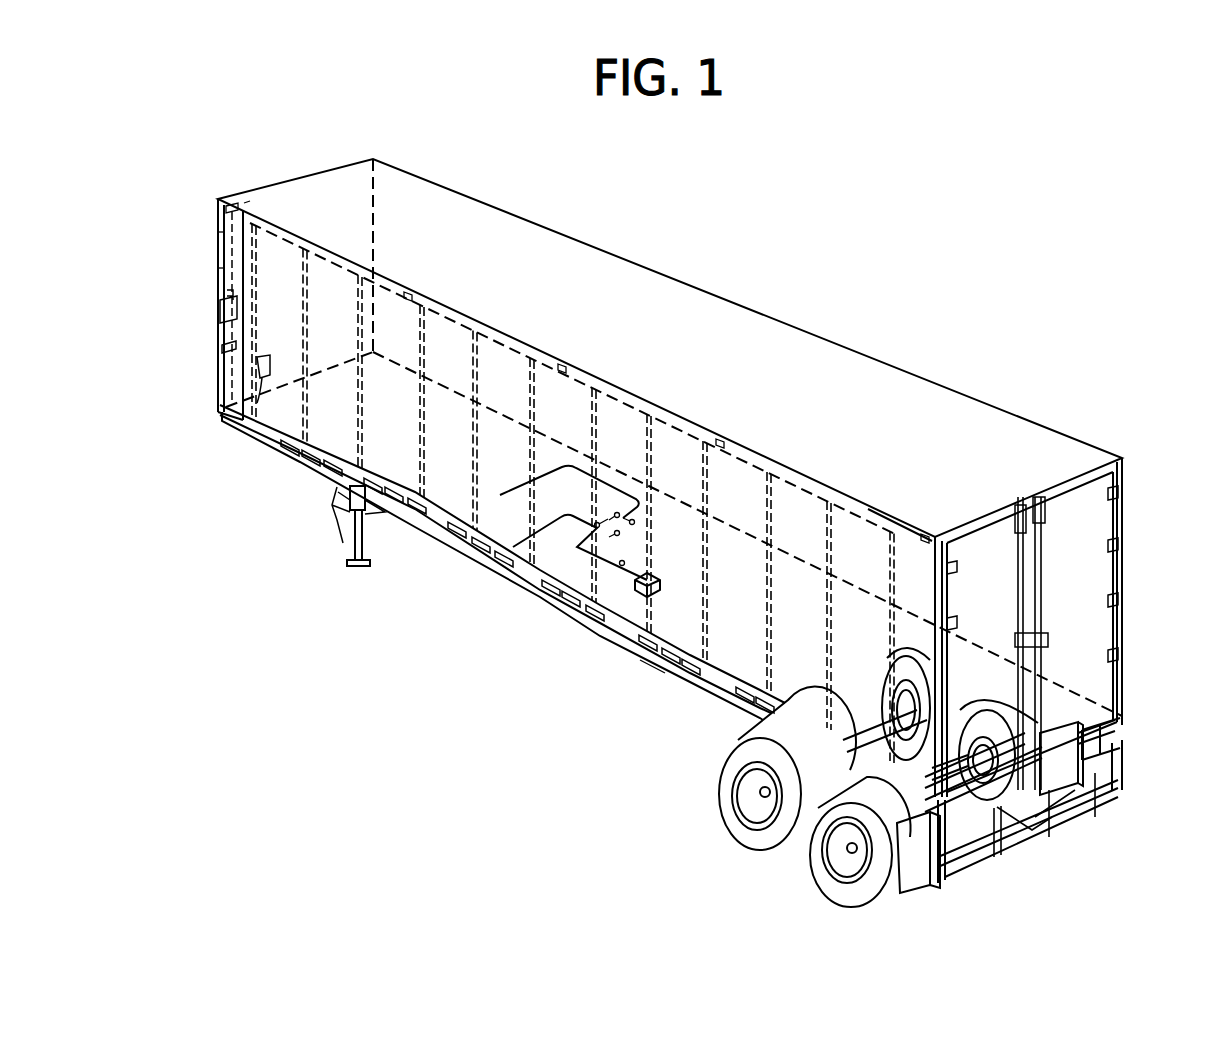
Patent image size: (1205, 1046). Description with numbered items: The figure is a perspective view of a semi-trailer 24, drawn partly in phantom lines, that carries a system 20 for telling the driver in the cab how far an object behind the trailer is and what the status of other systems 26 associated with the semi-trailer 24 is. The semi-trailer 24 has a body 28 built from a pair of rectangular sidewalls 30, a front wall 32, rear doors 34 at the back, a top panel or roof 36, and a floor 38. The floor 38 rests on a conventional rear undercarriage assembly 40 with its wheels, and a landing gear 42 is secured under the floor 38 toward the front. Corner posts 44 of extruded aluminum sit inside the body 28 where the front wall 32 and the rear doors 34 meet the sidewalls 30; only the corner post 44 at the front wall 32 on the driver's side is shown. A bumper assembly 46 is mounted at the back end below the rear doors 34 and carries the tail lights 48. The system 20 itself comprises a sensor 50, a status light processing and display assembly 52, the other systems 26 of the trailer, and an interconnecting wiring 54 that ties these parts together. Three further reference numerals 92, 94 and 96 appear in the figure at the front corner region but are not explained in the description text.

The system 20 is at (437, 530).
The semi-trailer 24 is at (867, 375).
The other systems 26 is at (648, 574).
The body 28 is at (665, 623).
The sidewalls 30 is at (510, 263).
The front wall 32 is at (345, 180).
The rear doors 34 is at (1093, 495).
The top panel or roof 36 is at (695, 305).
The floor 38 is at (652, 672).
The rear undercarriage assembly 40 is at (758, 710).
The landing gear 42 is at (370, 555).
The corner post 44 is at (218, 214).
The bumper assembly 46 is at (1033, 833).
The tail lights 48 is at (1125, 740).
The sensor 50 is at (962, 820).
The status light processing and display assembly 52 is at (222, 316).
The interconnecting wiring 54 is at (525, 570).
The corner post light 92 is at (218, 270).
The corner post indicator 94 is at (215, 235).
The corner post cap 96 is at (247, 200).